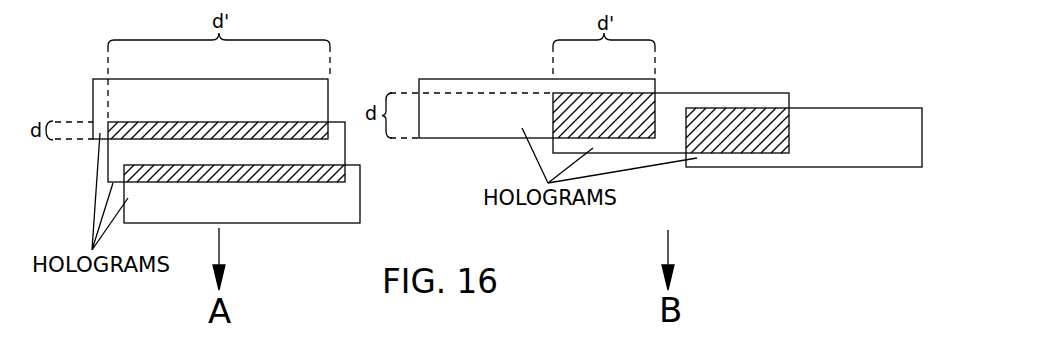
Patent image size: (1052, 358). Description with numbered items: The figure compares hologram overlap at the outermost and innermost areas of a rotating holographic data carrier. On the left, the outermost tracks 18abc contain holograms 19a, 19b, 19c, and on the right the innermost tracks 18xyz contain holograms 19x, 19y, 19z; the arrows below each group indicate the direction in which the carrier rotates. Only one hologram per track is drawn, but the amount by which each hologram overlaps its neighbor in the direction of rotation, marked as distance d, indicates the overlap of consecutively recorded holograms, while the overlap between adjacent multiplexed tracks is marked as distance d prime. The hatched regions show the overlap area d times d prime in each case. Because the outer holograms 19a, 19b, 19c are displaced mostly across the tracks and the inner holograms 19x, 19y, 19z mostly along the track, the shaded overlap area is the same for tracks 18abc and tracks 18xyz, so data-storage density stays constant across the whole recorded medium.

The hologram 19a is at (318, 105).
The hologram 19b is at (330, 148).
The hologram 19c is at (340, 199).
The hologram 19x is at (475, 88).
The hologram 19y is at (700, 107).
The hologram 19z is at (867, 122).
The outermost tracks 18abc is at (253, 259).
The innermost tracks 18xyz is at (703, 260).